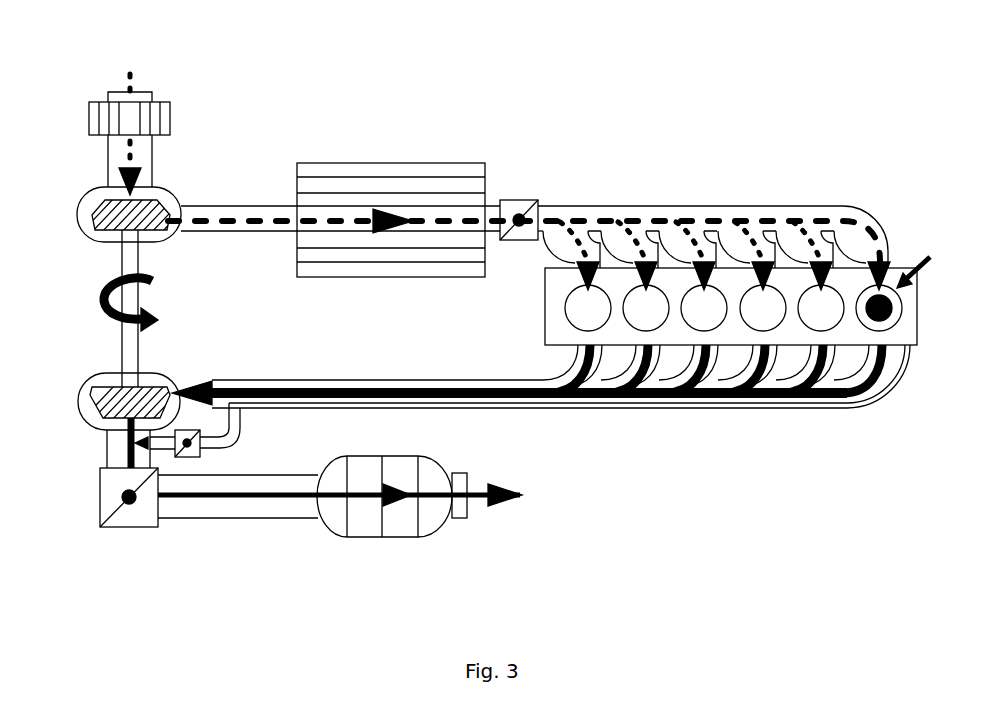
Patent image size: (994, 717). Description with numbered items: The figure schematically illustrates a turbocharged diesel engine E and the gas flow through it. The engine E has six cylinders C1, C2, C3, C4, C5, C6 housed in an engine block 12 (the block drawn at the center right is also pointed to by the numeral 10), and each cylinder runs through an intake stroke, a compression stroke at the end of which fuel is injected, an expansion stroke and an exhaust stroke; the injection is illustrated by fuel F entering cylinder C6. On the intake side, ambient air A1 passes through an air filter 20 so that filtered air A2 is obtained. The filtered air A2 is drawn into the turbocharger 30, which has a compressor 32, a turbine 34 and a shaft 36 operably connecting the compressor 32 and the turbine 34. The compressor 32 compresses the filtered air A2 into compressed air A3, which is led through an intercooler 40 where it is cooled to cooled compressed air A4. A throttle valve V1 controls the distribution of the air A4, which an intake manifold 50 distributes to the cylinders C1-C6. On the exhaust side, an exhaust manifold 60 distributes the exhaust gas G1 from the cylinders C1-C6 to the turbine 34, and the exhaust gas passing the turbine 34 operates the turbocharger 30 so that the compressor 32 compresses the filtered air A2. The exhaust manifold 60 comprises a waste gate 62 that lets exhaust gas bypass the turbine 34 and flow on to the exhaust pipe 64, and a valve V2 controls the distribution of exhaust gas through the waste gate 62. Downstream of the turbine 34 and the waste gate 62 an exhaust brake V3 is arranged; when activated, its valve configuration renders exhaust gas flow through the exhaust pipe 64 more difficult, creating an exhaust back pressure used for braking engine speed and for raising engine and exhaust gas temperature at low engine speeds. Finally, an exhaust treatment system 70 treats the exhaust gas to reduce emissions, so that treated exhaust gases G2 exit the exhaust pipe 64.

The turbocharged diesel engine E is at (778, 77).
The engine block 10 is at (543, 303).
The engine block 12 is at (902, 347).
The air filter 20 is at (163, 100).
The turbocharger 30 is at (97, 368).
The compressor 32 is at (163, 187).
The turbine 34 is at (157, 369).
The shaft 36 is at (139, 258).
The intercooler 40 is at (395, 162).
The intake manifold 50 is at (655, 203).
The exhaust manifold 60 is at (857, 408).
The waste gate 62 is at (243, 415).
The exhaust pipe 64 is at (205, 526).
The exhaust treatment system 70 is at (368, 541).
The ambient air A1 is at (133, 77).
The filtered air A2 is at (126, 162).
The compressed air A3 is at (257, 229).
The cooled compressed air A4 is at (757, 220).
The cylinder C1 is at (590, 320).
The cylinder C2 is at (653, 318).
The cylinder C3 is at (706, 318).
The cylinder C4 is at (766, 312).
The cylinder C5 is at (819, 313).
The cylinder C6 is at (862, 326).
The fuel F is at (921, 258).
The exhaust gas G1 is at (500, 397).
The treated exhaust gases G2 is at (475, 498).
The throttle valve V1 is at (514, 198).
The valve V2 is at (202, 461).
The exhaust brake V3 is at (128, 528).